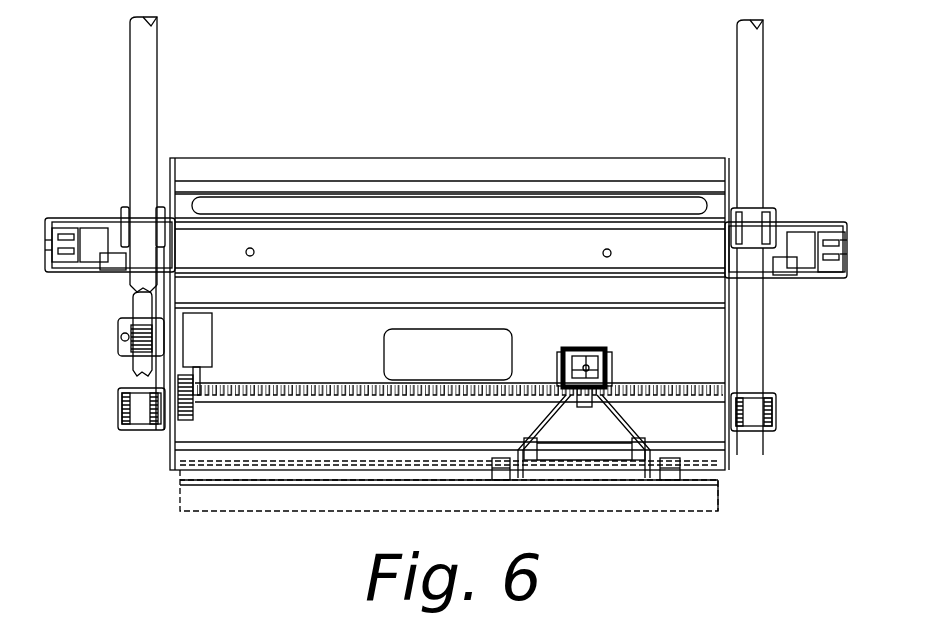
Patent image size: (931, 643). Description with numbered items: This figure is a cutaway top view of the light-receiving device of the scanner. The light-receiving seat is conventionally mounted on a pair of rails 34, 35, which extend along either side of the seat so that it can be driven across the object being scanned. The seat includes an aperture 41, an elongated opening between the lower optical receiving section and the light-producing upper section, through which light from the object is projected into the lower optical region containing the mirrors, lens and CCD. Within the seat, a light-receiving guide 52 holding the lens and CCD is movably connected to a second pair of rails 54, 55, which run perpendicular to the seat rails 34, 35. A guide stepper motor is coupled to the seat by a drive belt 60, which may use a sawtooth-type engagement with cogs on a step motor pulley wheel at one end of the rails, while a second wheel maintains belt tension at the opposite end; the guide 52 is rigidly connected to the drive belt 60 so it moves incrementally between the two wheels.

The rail 34 is at (157, 80).
The rail 35 is at (763, 117).
The aperture 41 is at (212, 203).
The light-receiving guide 52 is at (645, 418).
The rail 54 is at (357, 443).
The rail 55 is at (285, 382).
The drive belt 60 is at (652, 394).